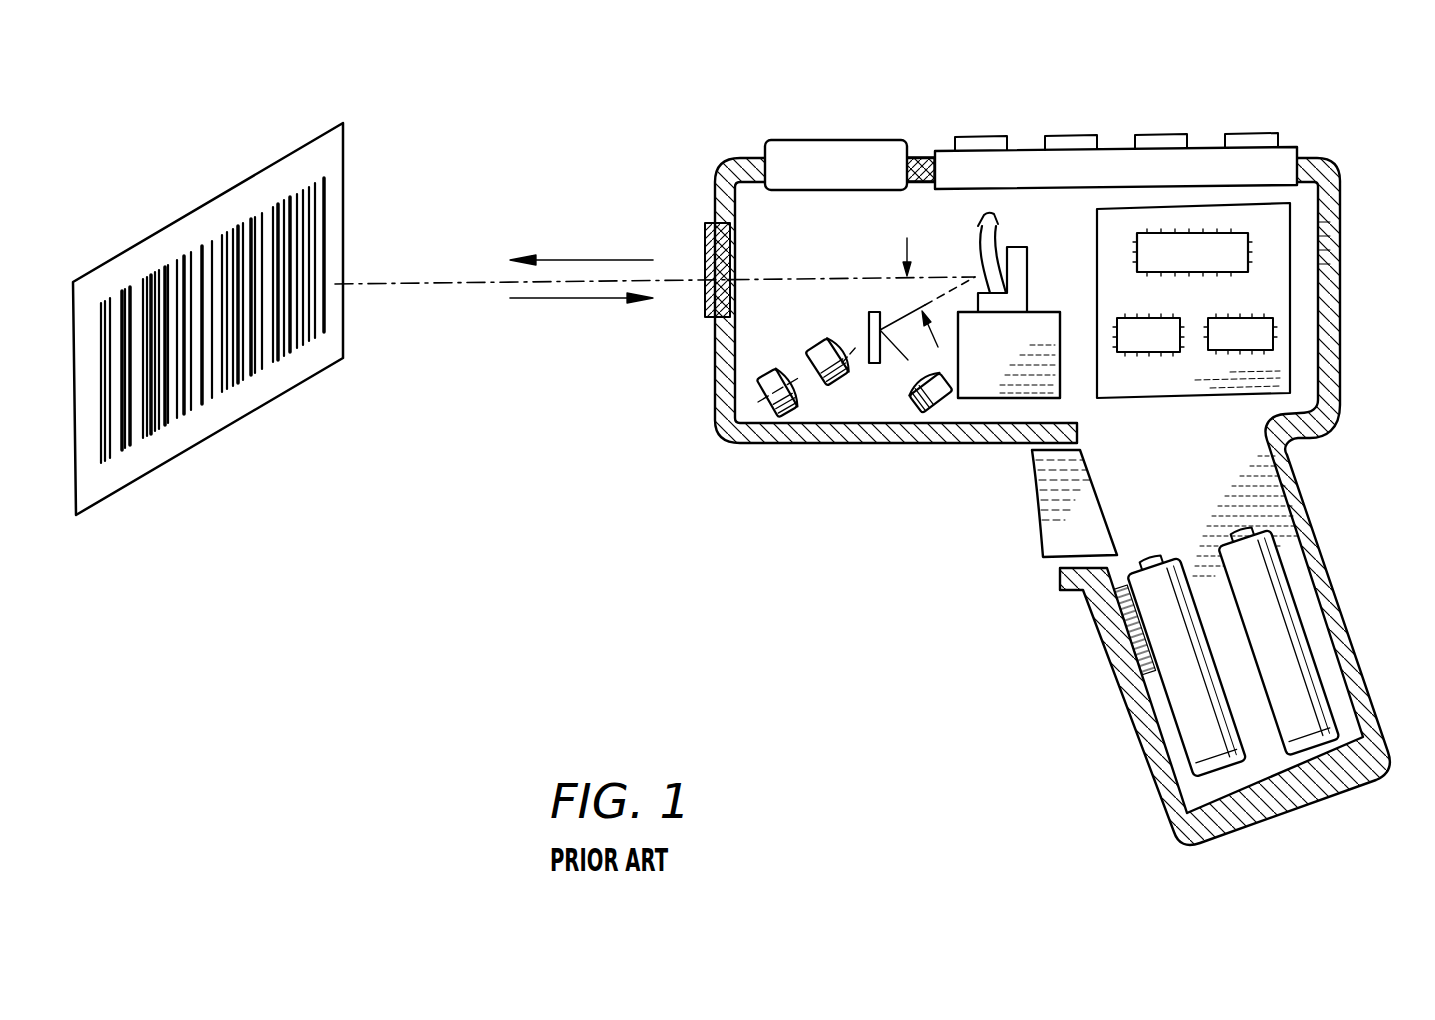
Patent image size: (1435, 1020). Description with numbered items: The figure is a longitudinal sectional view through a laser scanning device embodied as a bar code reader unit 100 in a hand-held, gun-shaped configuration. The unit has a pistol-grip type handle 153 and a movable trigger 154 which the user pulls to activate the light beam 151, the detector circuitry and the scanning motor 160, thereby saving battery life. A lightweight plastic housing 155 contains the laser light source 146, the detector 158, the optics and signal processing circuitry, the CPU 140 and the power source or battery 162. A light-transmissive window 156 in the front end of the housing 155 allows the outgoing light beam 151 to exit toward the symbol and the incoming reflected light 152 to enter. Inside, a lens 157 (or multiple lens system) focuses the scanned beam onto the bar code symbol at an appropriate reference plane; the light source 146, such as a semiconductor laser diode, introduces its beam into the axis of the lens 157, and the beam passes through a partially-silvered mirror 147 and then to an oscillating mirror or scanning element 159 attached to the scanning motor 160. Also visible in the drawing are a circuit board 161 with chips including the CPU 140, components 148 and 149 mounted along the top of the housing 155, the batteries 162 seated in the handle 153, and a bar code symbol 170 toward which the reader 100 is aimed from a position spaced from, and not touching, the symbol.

The bar code reader unit 100 is at (777, 618).
The CPU 140 is at (1165, 250).
The light source 146 is at (783, 418).
The partially-silvered mirror 147 is at (870, 302).
The circuit board / keyboard 148 is at (1215, 155).
The display / component 149 is at (835, 143).
The outgoing light beam 151 is at (568, 262).
The incoming reflected light 152 is at (530, 303).
The handle 153 is at (1137, 697).
The trigger 154 is at (1077, 528).
The housing 155 is at (1340, 372).
The light-transmissive window 156 is at (705, 230).
The lens 157 is at (835, 382).
The detector 158 is at (918, 405).
The scanning element 159 is at (992, 225).
The scanning motor 160 is at (987, 387).
The printed circuit board 161 is at (1343, 260).
The battery 162 is at (1302, 735).
The bar code symbol 170 is at (323, 225).